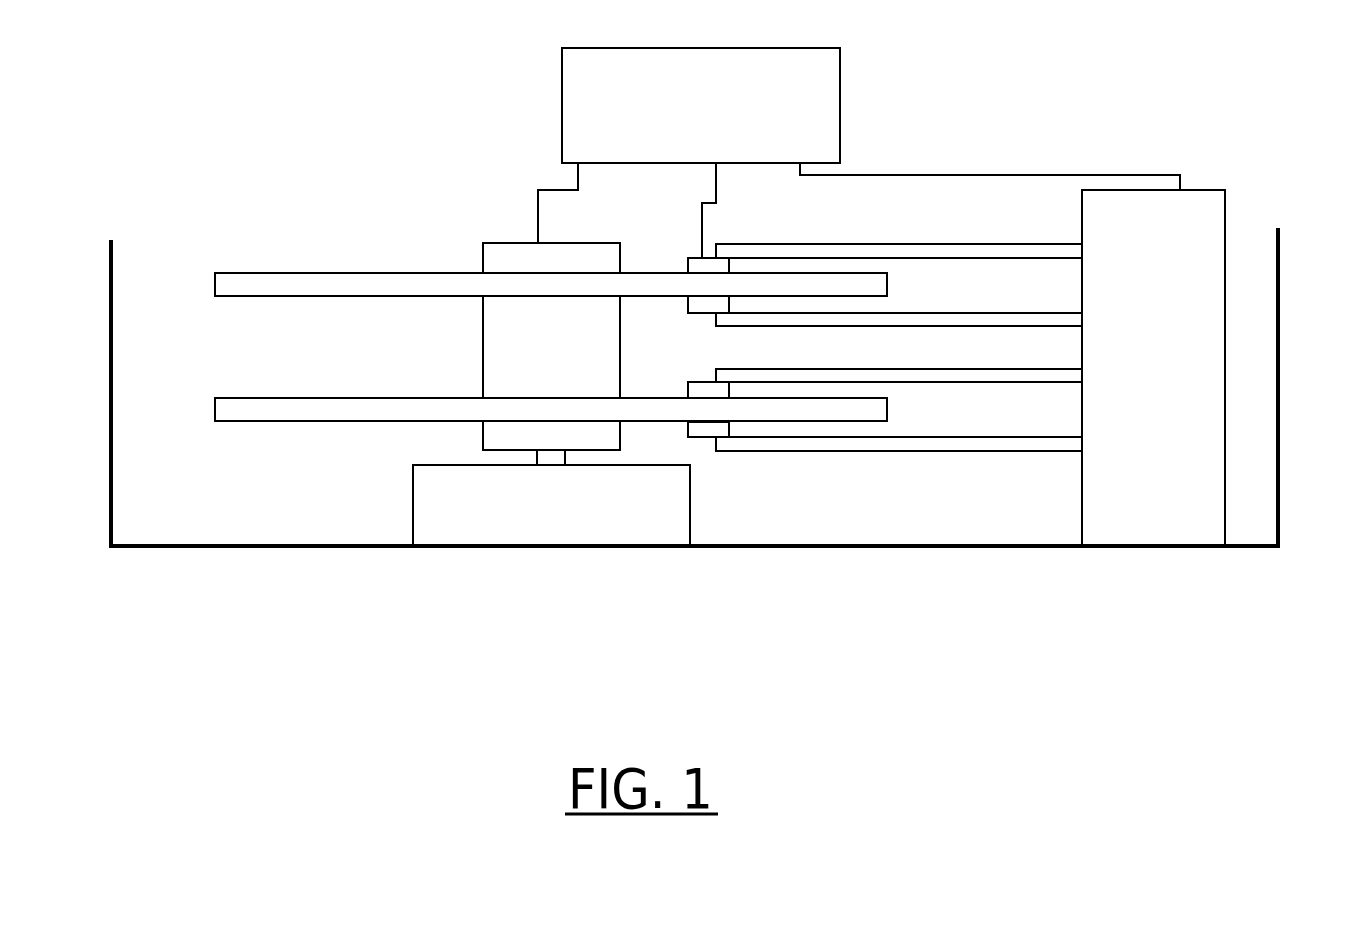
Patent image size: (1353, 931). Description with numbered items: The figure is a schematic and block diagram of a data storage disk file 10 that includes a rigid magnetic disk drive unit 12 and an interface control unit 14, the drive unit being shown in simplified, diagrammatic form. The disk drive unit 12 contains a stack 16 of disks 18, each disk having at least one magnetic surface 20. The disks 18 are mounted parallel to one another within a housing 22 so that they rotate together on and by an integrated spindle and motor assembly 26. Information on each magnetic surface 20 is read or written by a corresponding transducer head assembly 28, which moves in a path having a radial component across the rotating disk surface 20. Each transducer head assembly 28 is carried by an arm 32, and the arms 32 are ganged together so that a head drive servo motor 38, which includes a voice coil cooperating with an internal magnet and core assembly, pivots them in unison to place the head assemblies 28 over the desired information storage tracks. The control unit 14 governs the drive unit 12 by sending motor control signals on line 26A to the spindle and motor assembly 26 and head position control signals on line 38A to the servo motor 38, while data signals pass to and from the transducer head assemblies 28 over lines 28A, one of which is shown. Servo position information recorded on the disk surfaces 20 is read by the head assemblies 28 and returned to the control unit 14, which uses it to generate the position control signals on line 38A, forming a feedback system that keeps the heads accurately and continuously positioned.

The data storage disk file 10 is at (1055, 141).
The rigid magnetic disk drive unit 12 is at (293, 446).
The interface control unit 14 is at (701, 105).
The stack 16 is at (438, 243).
The disk 18 is at (518, 325).
The magnetic surface 20 is at (350, 270).
The housing 22 is at (1280, 452).
The integrated spindle and motor assembly 26 is at (551, 394).
The line 26A is at (530, 203).
The transducer head assembly 28 is at (688, 258).
The line 28A is at (692, 210).
The arm 32 is at (827, 245).
The head drive servo motor 38 is at (1153, 367).
The line 38A is at (990, 169).